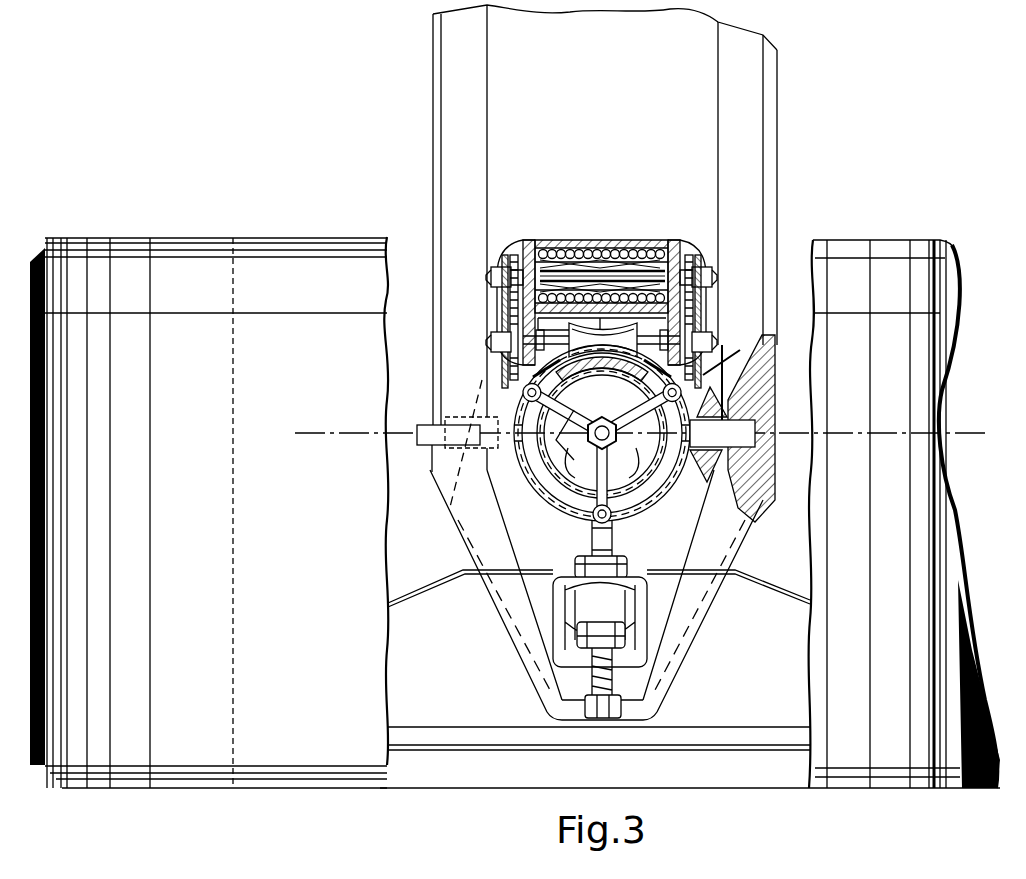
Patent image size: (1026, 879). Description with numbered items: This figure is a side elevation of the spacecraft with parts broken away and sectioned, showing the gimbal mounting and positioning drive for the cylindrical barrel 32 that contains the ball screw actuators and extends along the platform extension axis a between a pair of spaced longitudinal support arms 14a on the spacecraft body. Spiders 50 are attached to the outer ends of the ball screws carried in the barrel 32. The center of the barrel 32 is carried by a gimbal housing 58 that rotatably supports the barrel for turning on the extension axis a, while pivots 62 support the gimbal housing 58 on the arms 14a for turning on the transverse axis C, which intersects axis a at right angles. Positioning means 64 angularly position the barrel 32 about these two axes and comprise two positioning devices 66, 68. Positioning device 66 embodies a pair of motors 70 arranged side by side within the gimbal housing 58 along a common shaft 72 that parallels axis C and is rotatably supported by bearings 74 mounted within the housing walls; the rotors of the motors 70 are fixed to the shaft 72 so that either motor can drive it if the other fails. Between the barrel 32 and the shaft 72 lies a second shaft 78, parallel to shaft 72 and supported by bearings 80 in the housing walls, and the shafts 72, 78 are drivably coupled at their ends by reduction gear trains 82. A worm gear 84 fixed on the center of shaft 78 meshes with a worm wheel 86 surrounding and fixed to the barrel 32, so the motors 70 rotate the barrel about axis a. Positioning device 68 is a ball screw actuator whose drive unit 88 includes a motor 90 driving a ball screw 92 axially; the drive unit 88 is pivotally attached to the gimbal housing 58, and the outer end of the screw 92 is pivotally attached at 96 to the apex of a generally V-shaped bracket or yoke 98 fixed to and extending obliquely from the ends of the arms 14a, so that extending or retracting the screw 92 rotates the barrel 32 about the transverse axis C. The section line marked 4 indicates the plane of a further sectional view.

The longitudinal support arms 14a is at (778, 100).
The positioning means 64 is at (800, 285).
The pivots 62 is at (455, 458).
The worm wheel 86 is at (760, 392).
The gimbal housing 58 is at (518, 503).
The spiders 50 is at (615, 440).
The platform extension axis a is at (588, 440).
The cylindrical barrel 32 is at (625, 530).
The actuator drive unit 88 is at (590, 588).
The motor 90 is at (645, 592).
The positioning device 68 is at (553, 623).
The ball screw 92 is at (612, 676).
The pivotal attachment 96 is at (585, 708).
The V-shaped bracket or yoke 98 is at (528, 650).
The positioning device 66 is at (568, 240).
The motors 70 is at (555, 240).
The common shaft 72 is at (640, 250).
The bearings 74 is at (684, 240).
The reduction gear trains 82 is at (502, 300).
The worm gear 84 is at (645, 333).
The bearings 80 is at (498, 333).
The second shaft 78 is at (520, 362).
The transverse axis C is at (333, 435).
The section line 4- 4 is at (527, 240).